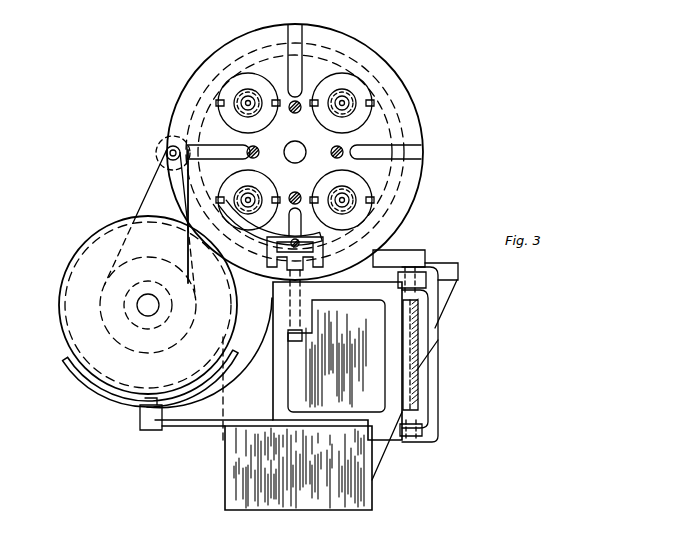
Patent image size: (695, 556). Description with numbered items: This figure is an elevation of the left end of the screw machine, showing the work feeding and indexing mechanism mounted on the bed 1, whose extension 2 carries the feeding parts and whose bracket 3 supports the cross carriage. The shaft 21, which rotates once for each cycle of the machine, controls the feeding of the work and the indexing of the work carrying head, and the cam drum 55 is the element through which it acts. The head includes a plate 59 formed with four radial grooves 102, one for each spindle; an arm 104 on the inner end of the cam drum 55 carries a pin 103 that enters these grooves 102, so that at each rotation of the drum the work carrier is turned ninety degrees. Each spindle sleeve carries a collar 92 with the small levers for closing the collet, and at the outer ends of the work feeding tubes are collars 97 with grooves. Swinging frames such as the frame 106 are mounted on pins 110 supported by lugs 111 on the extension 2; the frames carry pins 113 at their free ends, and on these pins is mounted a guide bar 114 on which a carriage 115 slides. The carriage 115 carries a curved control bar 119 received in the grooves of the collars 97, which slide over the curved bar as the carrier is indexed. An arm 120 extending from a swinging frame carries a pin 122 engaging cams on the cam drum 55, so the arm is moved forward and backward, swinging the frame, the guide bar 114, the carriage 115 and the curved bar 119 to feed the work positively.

The bed 1 is at (313, 461).
The extension 2 is at (430, 345).
The bracket 3 is at (438, 303).
The shaft 21 is at (148, 312).
The cam drum 55 is at (67, 270).
The plate 59 is at (405, 120).
The collar 92 is at (240, 182).
The collars 97 is at (256, 195).
The radial grooves 102 is at (300, 72).
The pin 103 is at (165, 153).
The arm 104 is at (150, 185).
The swinging frame 106 is at (338, 420).
The pins 110 is at (412, 382).
The lugs 111 is at (410, 278).
The pins 113 is at (295, 341).
The guide bar 114 is at (277, 270).
The carriage 115 is at (322, 238).
The curved control bar 119 is at (260, 226).
The arm 120 is at (214, 415).
The pin 122 is at (135, 410).